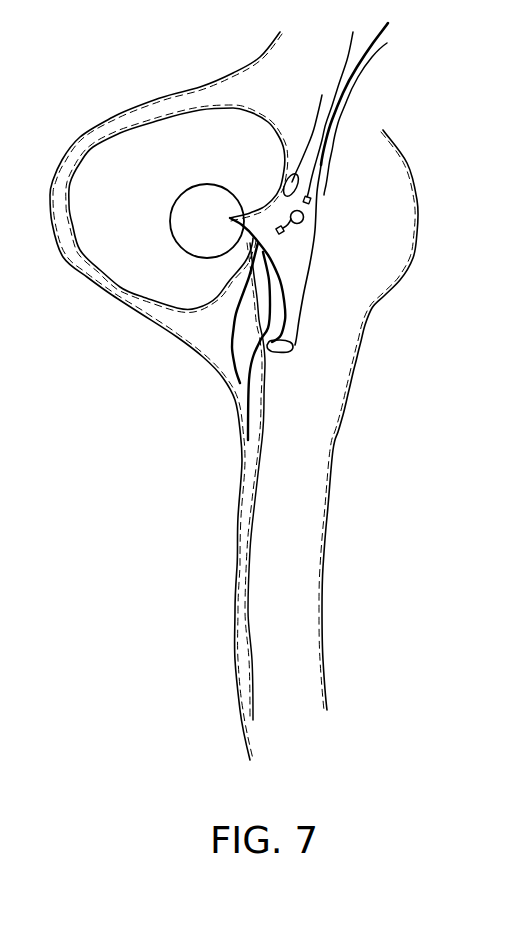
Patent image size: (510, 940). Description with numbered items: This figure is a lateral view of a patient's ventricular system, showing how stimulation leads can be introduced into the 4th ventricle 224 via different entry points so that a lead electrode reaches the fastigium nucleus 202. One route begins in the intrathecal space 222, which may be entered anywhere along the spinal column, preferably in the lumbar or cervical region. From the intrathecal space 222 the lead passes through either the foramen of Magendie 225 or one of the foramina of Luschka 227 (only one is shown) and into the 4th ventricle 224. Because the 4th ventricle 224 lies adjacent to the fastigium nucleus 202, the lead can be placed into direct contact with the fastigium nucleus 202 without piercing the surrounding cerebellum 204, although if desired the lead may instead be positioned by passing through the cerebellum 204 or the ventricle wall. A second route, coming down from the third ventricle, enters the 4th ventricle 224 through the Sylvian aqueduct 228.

The fastigium nucleus 202 is at (184, 193).
The cerebellum 204 is at (121, 285).
The intrathecal space 222 is at (243, 522).
The 4th ventricle 224 is at (297, 250).
The foramen of Magendie 225 is at (292, 345).
The foramen of Luschka 227 is at (303, 216).
The Sylvian aqueduct 228 is at (358, 77).